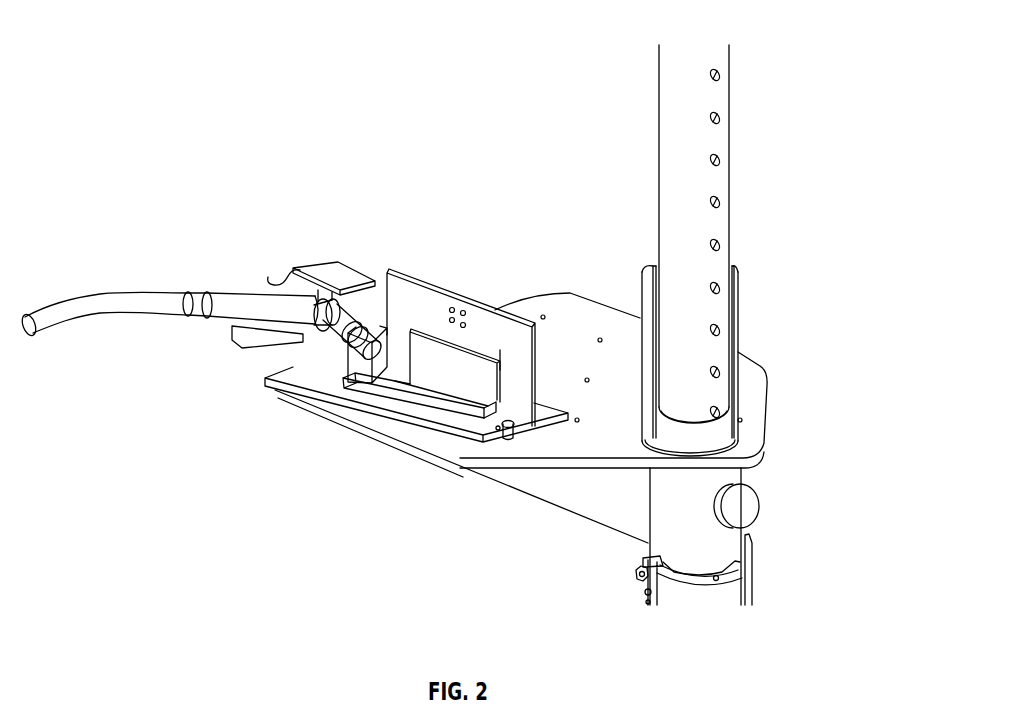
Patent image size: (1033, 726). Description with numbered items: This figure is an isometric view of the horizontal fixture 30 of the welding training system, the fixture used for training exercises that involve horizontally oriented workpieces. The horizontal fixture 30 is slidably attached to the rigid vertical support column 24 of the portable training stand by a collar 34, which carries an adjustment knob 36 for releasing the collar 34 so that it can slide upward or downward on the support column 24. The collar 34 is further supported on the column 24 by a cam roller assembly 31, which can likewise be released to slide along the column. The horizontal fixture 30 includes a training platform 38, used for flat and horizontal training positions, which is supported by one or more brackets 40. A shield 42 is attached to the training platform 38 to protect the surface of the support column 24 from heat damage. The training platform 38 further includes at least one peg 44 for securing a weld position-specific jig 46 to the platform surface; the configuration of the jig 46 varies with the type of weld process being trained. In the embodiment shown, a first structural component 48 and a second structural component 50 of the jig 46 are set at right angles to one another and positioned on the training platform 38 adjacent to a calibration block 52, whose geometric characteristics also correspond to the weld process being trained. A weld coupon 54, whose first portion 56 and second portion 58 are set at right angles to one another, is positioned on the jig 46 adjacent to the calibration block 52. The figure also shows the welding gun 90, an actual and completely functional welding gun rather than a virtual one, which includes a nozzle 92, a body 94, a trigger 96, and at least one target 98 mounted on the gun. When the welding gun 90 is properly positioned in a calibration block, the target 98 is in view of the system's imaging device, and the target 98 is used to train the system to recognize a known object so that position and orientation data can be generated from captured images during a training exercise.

The horizontal fixture 30 is at (417, 104).
The vertical support column 24 is at (731, 99).
The shield 42 is at (740, 286).
The training platform 38 is at (590, 307).
The bracket 40 is at (599, 526).
The collar 34 is at (746, 472).
The adjustment knob 36 is at (759, 508).
The cam roller assembly 31 is at (753, 590).
The weld position-specific jig 46 is at (400, 251).
The second structural component 50 is at (477, 308).
The weld coupon 54 is at (511, 358).
The first portion of weld coupon 56 is at (477, 423).
The second portion of weld coupon 58 is at (436, 373).
The peg 44 is at (508, 432).
The first structural component 48 is at (545, 418).
The calibration block 52 is at (390, 386).
The nozzle 92 is at (345, 352).
The target 98 is at (332, 268).
The welding gun 90 is at (242, 236).
The body 94 is at (215, 292).
The trigger 96 is at (258, 340).